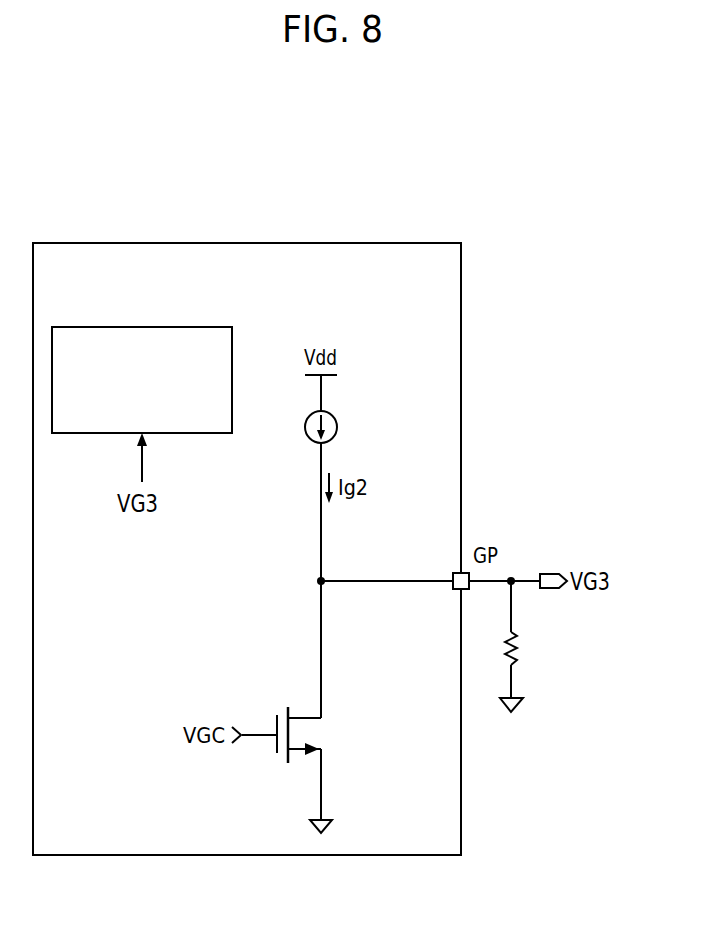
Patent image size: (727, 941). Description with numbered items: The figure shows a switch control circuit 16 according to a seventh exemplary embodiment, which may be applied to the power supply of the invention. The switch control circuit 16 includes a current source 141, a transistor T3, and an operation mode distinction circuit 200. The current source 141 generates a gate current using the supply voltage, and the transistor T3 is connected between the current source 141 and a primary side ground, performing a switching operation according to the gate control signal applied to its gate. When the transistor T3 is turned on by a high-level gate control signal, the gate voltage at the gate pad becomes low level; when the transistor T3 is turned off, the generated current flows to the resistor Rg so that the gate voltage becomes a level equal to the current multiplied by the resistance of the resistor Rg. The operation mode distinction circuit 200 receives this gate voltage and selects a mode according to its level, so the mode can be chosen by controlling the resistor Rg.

The switch control circuit 16 is at (416, 243).
The operation mode distinction circuit 200 is at (205, 327).
The current source 141 is at (337, 427).
The transistor T3 is at (292, 770).
The resistor Rg is at (522, 646).